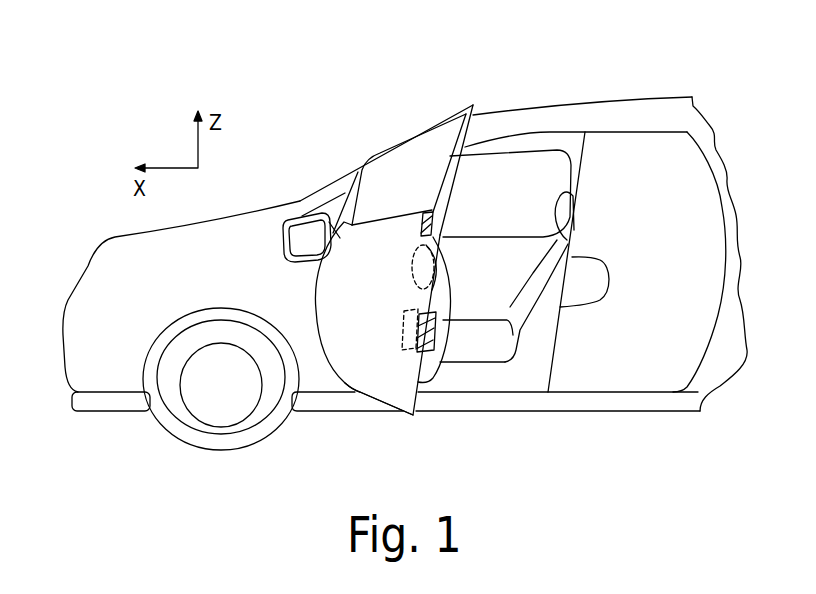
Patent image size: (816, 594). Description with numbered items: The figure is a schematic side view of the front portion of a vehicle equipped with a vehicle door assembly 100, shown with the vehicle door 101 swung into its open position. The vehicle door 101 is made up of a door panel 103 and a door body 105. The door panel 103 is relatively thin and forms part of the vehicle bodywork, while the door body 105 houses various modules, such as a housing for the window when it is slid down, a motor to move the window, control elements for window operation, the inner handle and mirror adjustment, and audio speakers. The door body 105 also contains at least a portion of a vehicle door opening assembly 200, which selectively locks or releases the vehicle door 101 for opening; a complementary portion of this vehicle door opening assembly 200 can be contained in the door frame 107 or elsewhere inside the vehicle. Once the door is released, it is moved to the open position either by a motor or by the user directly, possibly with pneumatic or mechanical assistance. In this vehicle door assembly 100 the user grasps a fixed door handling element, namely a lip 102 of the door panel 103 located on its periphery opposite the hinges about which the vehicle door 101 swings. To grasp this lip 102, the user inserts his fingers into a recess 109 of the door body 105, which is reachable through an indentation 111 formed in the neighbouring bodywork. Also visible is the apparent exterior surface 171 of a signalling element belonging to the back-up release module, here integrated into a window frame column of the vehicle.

The vehicle door assembly 100 is at (338, 124).
The vehicle door 101 is at (452, 118).
The lip 102 is at (418, 250).
The door panel 103 is at (377, 318).
The door body 105 is at (424, 378).
The door frame 107 is at (571, 130).
The recess 109 is at (443, 240).
The indentation 111 is at (597, 262).
The apparent exterior surface 171 is at (430, 208).
The vehicle door opening assembly 200 is at (434, 338).